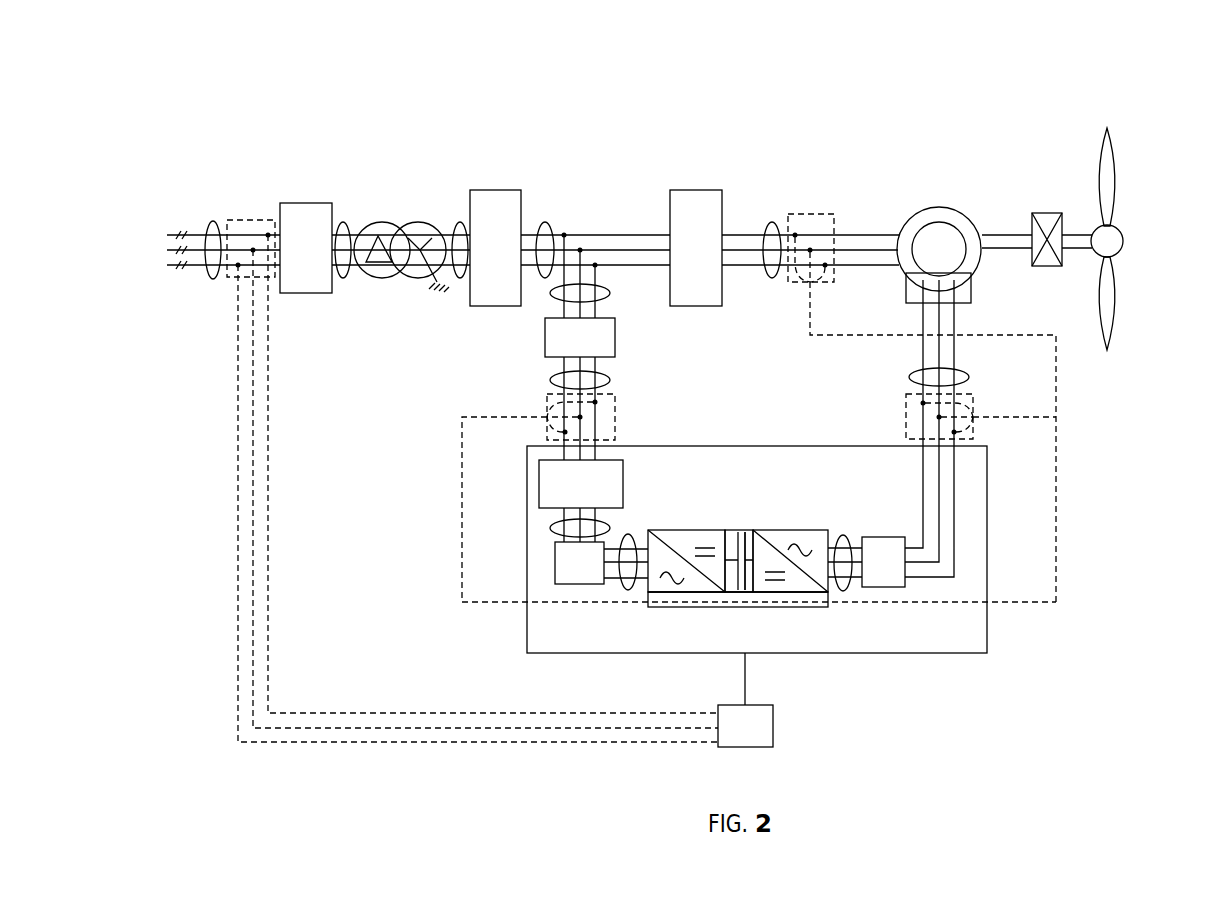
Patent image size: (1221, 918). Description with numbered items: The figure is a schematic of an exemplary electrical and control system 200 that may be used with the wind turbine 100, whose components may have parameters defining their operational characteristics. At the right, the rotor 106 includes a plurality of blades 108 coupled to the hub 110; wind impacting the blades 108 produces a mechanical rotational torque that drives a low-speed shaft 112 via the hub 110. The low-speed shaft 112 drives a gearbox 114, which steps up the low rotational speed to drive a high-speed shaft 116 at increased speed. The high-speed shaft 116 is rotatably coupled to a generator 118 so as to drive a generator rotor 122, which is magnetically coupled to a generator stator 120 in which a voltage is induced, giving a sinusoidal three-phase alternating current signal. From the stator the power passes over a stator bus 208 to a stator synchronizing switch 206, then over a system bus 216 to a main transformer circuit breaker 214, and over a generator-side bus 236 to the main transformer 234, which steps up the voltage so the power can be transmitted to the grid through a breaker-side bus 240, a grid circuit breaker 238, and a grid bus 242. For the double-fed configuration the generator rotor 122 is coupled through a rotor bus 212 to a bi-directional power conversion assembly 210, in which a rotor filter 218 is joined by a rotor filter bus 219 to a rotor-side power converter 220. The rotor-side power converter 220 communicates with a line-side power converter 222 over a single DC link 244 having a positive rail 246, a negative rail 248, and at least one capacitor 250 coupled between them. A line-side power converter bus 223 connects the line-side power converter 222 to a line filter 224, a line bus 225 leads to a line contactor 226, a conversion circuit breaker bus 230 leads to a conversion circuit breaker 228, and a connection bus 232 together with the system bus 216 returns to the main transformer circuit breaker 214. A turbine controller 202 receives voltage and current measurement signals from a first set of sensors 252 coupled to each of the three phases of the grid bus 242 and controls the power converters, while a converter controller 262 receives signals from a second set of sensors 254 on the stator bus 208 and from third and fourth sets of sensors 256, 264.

The wind turbine 100 is at (1103, 112).
The rotor 106 is at (1127, 208).
The blades 108 is at (1117, 167).
The hub 110 is at (1123, 240).
The low-speed shaft 112 is at (1072, 232).
The gearbox 114 is at (1040, 213).
The high-speed shaft 116 is at (998, 236).
The generator 118 is at (937, 178).
The generator stator 120 is at (940, 207).
The generator rotor 122 is at (935, 237).
The electrical and control system 200 is at (236, 131).
The turbine controller 202 is at (760, 736).
The stator synchronizing switch 206 is at (690, 190).
The stator bus 208 is at (772, 222).
The power conversion assembly 210 is at (1057, 510).
The rotor bus 212 is at (970, 380).
The main transformer circuit breaker 214 is at (493, 190).
The system bus 216 is at (545, 222).
The rotor filter 218 is at (880, 537).
The rotor filter bus 219 is at (840, 533).
The rotor-side power converter 220 is at (832, 590).
The line-side power converter 222 is at (647, 590).
The line-side power converter bus 223 is at (632, 533).
The line filter 224 is at (555, 560).
The line bus 225 is at (551, 528).
The line contactor 226 is at (539, 482).
The conversion circuit breaker 228 is at (615, 335).
The conversion circuit breaker bus 230 is at (610, 380).
The connection bus 232 is at (610, 293).
The main transformer 234 is at (418, 222).
The generator-side bus 236 is at (460, 222).
The grid circuit breaker 238 is at (305, 203).
The breaker-side bus 240 is at (345, 222).
The grid bus 242 is at (212, 221).
The DC link 244 is at (726, 497).
The positive rail 246 is at (745, 532).
The negative rail 248 is at (743, 597).
The capacitor 250 is at (733, 558).
The first set of voltage and electric current sensors 252 is at (225, 292).
The second set of voltage and electric current sensors 254 is at (828, 200).
The third set of voltage and electric current sensors 256 is at (903, 426).
The converter controller 262 is at (793, 602).
The fourth set of voltage and electric current sensors 264 is at (617, 415).